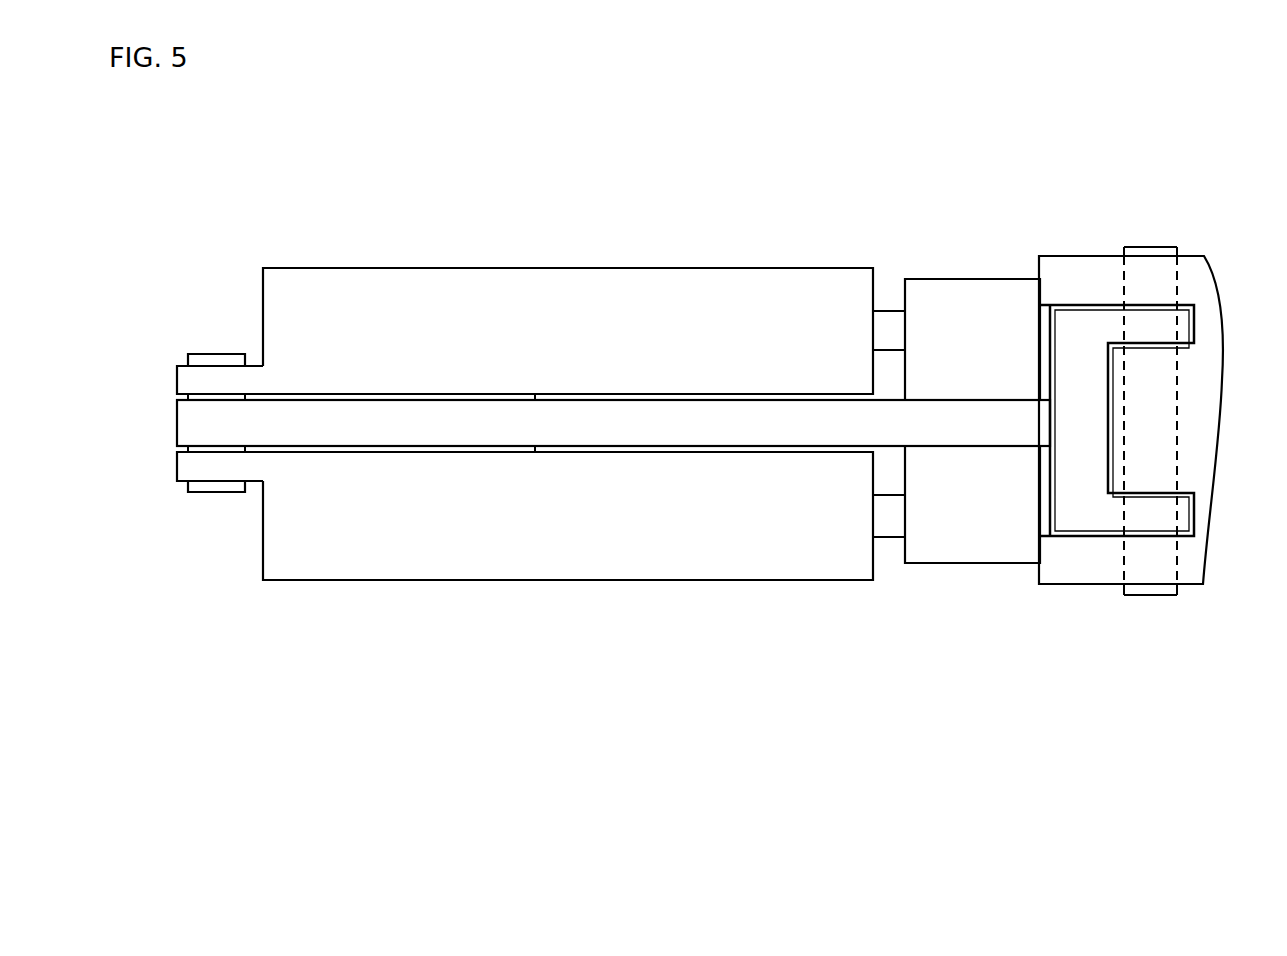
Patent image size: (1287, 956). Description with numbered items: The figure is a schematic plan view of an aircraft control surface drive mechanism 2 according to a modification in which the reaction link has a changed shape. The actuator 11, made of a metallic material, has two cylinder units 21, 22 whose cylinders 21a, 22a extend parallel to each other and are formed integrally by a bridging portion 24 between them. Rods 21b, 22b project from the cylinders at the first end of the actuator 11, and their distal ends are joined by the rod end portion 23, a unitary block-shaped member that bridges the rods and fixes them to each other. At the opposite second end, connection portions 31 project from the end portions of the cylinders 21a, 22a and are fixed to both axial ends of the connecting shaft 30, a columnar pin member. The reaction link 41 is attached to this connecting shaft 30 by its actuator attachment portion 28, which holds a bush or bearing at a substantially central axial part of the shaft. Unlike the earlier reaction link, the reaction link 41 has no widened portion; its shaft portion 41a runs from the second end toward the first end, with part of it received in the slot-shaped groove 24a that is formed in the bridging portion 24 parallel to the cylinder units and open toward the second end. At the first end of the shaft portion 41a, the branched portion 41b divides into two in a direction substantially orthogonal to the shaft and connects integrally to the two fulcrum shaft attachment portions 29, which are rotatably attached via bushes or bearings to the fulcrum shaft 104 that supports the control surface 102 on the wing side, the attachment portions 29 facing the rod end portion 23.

The aircraft control surface drive mechanism 2 is at (670, 409).
The actuator 11 is at (490, 427).
The cylinder unit 21 is at (556, 682).
The cylinder 21a is at (568, 574).
The rod 21b is at (841, 619).
The cylinder unit 22 is at (490, 157).
The cylinder 22a is at (568, 268).
The rod 22b is at (858, 230).
The rod end portion 23 is at (972, 498).
The bridging portion 24 is at (468, 545).
The groove 24a is at (298, 545).
The actuator attachment portion 28 is at (558, 431).
The fulcrum shaft attachment portion 29 is at (1164, 421).
The connecting shaft 30 is at (176, 445).
The connection portion 31 is at (169, 434).
The reaction link 41 is at (670, 418).
The shaft portion 41a is at (558, 561).
The branched portion 41b is at (1119, 390).
The control surface 102 is at (1131, 495).
The fulcrum shaft 104 is at (1151, 334).